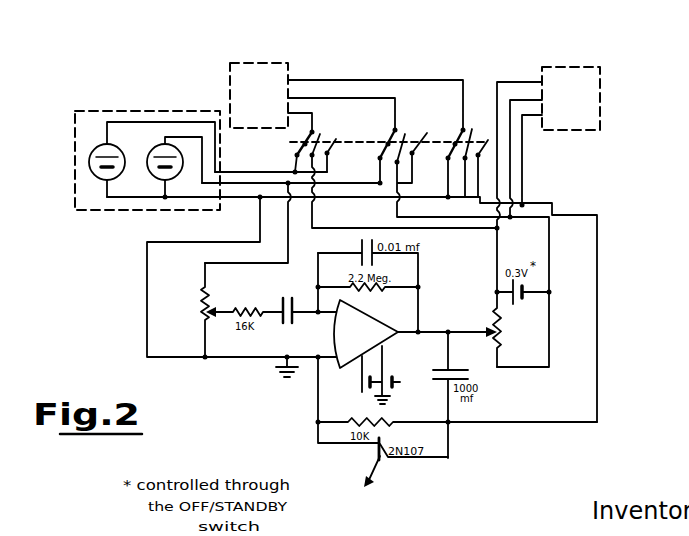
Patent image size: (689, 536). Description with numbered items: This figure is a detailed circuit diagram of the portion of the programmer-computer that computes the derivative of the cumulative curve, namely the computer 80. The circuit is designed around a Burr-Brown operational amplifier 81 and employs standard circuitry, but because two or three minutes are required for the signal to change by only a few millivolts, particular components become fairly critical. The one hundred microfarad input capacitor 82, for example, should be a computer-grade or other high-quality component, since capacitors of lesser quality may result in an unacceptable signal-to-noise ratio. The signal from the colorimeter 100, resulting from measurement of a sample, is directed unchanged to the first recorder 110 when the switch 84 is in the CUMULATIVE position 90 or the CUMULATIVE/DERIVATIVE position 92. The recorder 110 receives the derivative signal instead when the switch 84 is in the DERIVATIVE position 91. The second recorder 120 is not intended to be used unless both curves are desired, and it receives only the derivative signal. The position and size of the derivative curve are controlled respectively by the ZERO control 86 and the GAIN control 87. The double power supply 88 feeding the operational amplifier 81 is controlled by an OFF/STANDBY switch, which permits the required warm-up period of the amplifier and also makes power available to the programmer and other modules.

The computer 80 is at (411, 70).
The operational amplifier 81 is at (361, 321).
The input capacitor 82 is at (294, 296).
The switch 84 is at (424, 111).
The ZERO control 86 is at (496, 316).
The GAIN control 87 is at (200, 289).
The double power supply 88 is at (362, 382).
The CUMULATIVE position 90 is at (317, 150).
The DERIVATIVE position 91 is at (398, 155).
The CUMULATIVE/DERIVATIVE position 92 is at (410, 158).
The colorimeter 100 is at (97, 214).
The first recorder 110 is at (230, 72).
The second recorder 120 is at (597, 106).